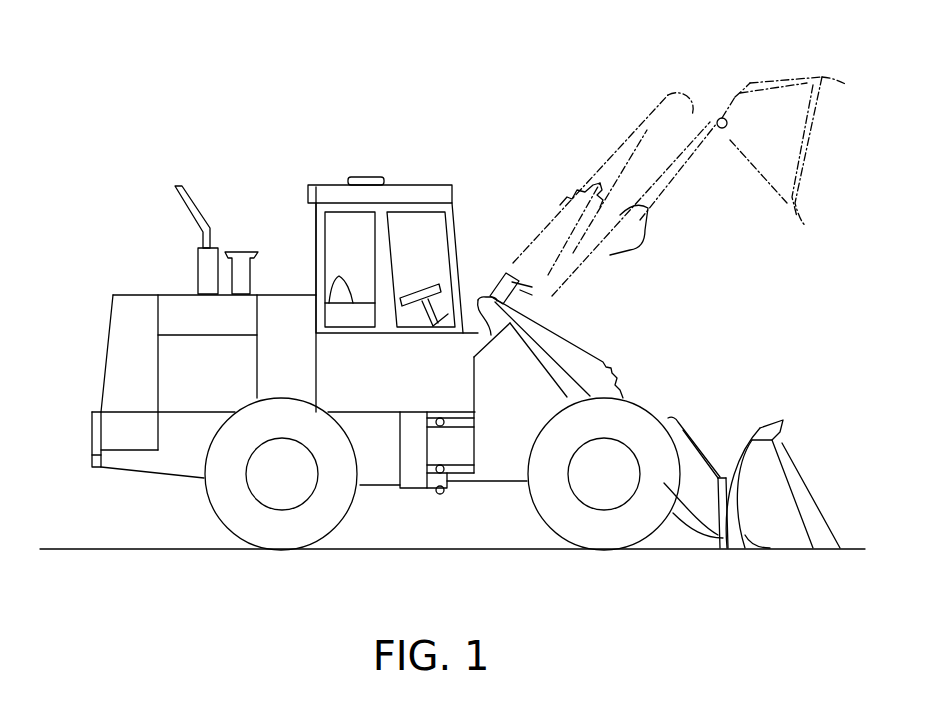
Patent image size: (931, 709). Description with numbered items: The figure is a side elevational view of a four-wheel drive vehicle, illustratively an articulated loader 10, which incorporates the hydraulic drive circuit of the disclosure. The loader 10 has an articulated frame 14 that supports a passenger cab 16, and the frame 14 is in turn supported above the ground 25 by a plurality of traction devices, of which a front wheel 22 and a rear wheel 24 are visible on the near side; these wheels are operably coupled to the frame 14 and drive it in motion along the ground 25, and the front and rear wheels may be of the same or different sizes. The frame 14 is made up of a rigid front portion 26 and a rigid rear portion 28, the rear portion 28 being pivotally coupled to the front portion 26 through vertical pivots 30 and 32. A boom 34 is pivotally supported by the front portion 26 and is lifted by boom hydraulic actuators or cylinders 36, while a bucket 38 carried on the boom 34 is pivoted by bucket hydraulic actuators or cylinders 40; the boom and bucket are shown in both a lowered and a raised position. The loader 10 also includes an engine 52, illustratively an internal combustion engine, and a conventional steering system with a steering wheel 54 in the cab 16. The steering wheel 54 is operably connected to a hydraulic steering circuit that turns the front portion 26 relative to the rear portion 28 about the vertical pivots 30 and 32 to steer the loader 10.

The articulated loader 10 is at (268, 198).
The articulated frame 14 is at (170, 481).
The passenger cab 16 is at (470, 210).
The front wheel 22 is at (638, 415).
The rear wheel 24 is at (231, 513).
The ground 25 is at (70, 548).
The rigid front portion 26 is at (495, 474).
The rigid rear portion 28 is at (113, 461).
The vertical pivot 30 is at (451, 432).
The vertical pivot 32 is at (451, 494).
The boom 34 is at (673, 206).
The boom hydraulic cylinder 36 is at (600, 316).
The bucket 38 is at (805, 186).
The bucket hydraulic cylinder 40 is at (570, 196).
The engine 52 is at (178, 306).
The steering wheel 54 is at (430, 290).